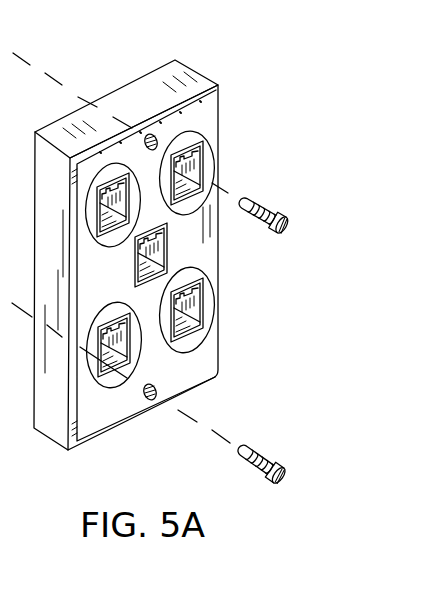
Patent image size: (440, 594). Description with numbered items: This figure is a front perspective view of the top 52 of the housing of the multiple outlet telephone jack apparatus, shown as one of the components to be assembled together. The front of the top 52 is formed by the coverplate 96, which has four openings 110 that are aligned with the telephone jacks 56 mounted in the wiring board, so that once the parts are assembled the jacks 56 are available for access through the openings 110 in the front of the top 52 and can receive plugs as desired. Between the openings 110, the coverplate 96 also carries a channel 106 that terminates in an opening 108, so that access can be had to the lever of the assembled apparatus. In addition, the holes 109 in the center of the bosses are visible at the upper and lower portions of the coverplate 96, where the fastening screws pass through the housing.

The top 52 is at (178, 62).
The telephone jacks 56 is at (114, 105).
The coverplate 96 is at (118, 285).
The channel 106 is at (159, 262).
The opening 108 is at (164, 236).
The holes 109 is at (157, 137).
The openings 110 is at (190, 162).